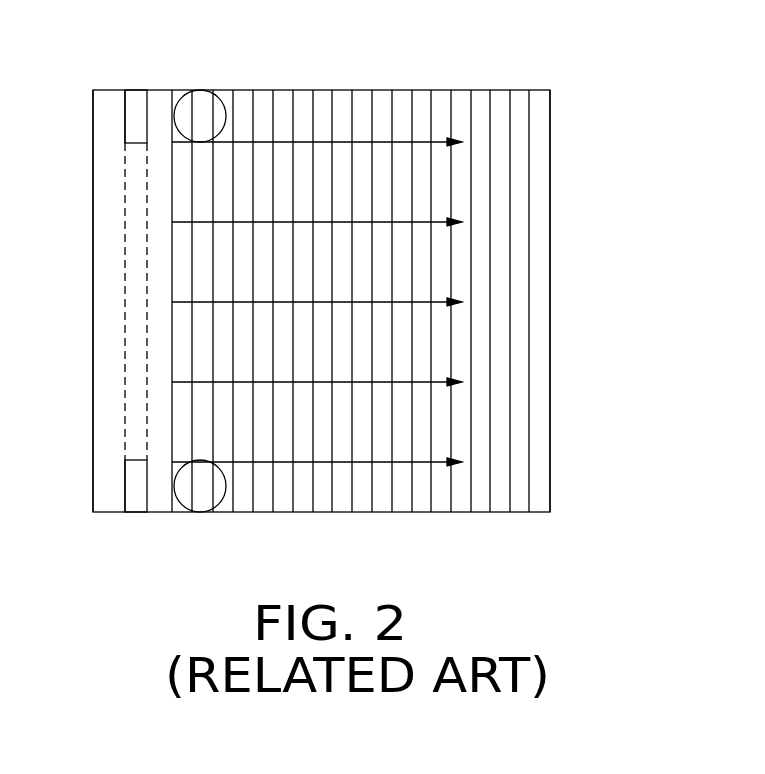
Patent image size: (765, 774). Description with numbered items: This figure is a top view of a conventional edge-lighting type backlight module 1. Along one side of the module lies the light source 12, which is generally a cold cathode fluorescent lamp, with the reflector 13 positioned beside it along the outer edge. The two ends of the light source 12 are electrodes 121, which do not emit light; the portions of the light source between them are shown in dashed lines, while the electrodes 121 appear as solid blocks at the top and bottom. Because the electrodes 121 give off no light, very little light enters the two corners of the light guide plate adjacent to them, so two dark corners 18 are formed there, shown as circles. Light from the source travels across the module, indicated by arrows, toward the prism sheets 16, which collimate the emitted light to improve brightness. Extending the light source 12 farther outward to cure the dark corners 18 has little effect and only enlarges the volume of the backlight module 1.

The backlight module 1 is at (321, 256).
The light source 12 is at (137, 313).
The electrodes 121 is at (137, 102).
The reflector 13 is at (112, 232).
The prism sheets 16 is at (535, 325).
The dark corners 18 is at (203, 105).